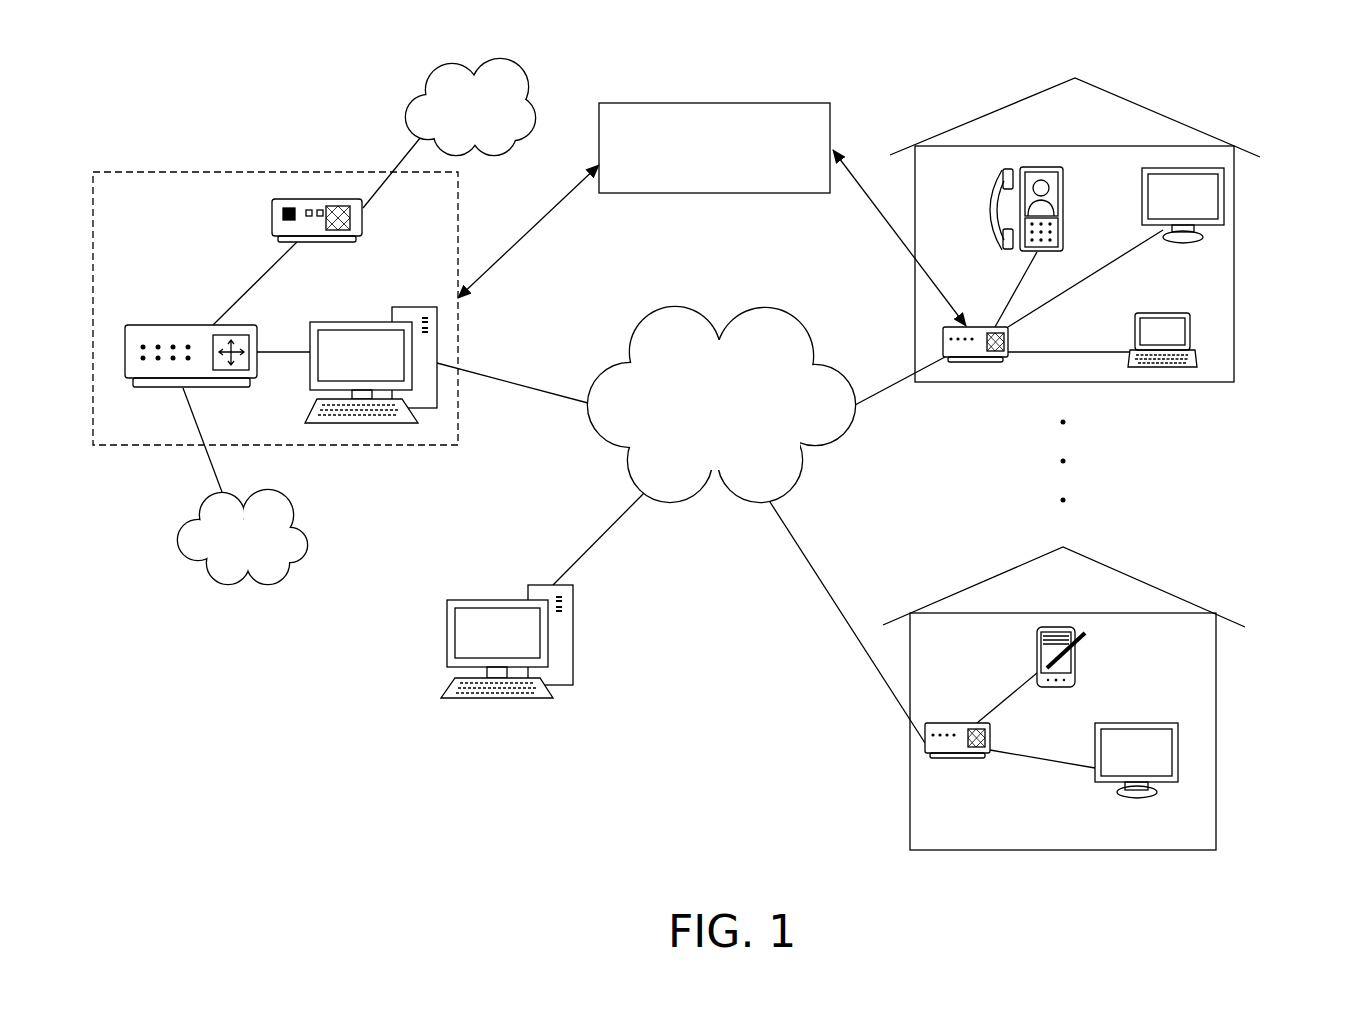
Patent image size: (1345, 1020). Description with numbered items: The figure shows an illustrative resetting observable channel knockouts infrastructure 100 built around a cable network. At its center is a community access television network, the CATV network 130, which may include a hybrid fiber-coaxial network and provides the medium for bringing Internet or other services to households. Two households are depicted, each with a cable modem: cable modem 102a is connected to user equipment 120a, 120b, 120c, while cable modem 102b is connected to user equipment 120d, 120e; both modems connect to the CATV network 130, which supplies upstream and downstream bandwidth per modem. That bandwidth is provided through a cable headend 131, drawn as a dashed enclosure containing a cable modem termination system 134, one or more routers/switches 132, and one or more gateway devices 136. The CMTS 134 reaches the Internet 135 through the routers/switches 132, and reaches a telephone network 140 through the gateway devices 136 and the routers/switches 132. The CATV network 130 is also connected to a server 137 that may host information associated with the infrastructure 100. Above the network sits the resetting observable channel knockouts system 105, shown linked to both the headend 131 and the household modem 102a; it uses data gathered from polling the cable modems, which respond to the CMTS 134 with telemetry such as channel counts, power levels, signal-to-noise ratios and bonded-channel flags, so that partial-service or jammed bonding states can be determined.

The resetting observable channel knockouts infrastructure 100 is at (1268, 48).
The resetting observable channel knockouts system 105 is at (705, 104).
The CATV network 130 is at (682, 307).
The cable headend 131 is at (168, 172).
The routers/switches 132 is at (168, 325).
The cable modem termination system 134 is at (345, 322).
The Internet 135 is at (179, 532).
The gateway devices 136 is at (272, 207).
The server 137 is at (460, 600).
The telephone network 140 is at (426, 84).
The user equipment 120a is at (988, 180).
The user equipment 120b is at (1142, 192).
The user equipment 120c is at (1145, 313).
The cable modem 102a is at (1010, 335).
The user equipment 120d is at (1037, 645).
The user equipment 120e is at (1155, 722).
The cable modem 102b is at (993, 738).